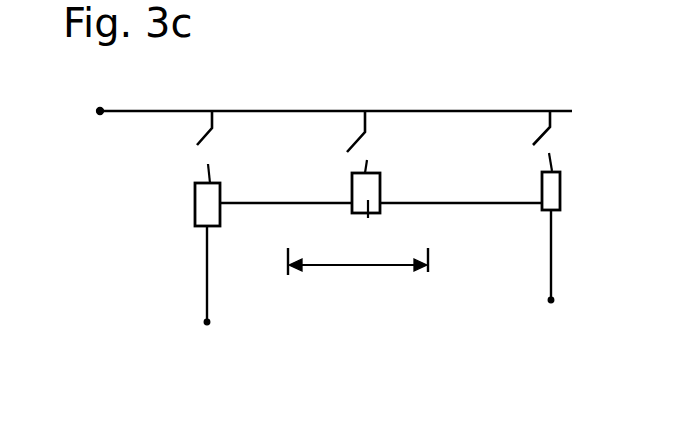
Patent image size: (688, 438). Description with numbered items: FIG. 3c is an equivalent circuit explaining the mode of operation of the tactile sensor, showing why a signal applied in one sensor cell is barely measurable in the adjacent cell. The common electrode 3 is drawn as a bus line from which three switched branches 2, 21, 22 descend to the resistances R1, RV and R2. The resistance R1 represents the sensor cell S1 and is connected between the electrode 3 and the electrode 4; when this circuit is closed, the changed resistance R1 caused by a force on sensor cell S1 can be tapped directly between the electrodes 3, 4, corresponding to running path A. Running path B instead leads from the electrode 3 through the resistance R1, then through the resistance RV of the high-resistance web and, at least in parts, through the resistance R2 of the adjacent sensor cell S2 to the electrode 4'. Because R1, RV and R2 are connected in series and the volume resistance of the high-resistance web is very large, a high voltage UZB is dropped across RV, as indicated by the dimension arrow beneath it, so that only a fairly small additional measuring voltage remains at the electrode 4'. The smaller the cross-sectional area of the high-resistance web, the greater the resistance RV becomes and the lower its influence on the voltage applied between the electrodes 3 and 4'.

The electrode 3 is at (312, 113).
The switch 2 is at (187, 147).
The switch 21 is at (332, 142).
The switch 22 is at (518, 142).
The electrode 4 is at (209, 296).
The electrode 4' is at (552, 279).
The resistance of sensor cell S1 R1 is at (195, 198).
The resistance of sensor cell S2 R2 is at (560, 190).
The resistance of the high-resistance web RV is at (367, 213).
The voltage UZB is at (358, 284).